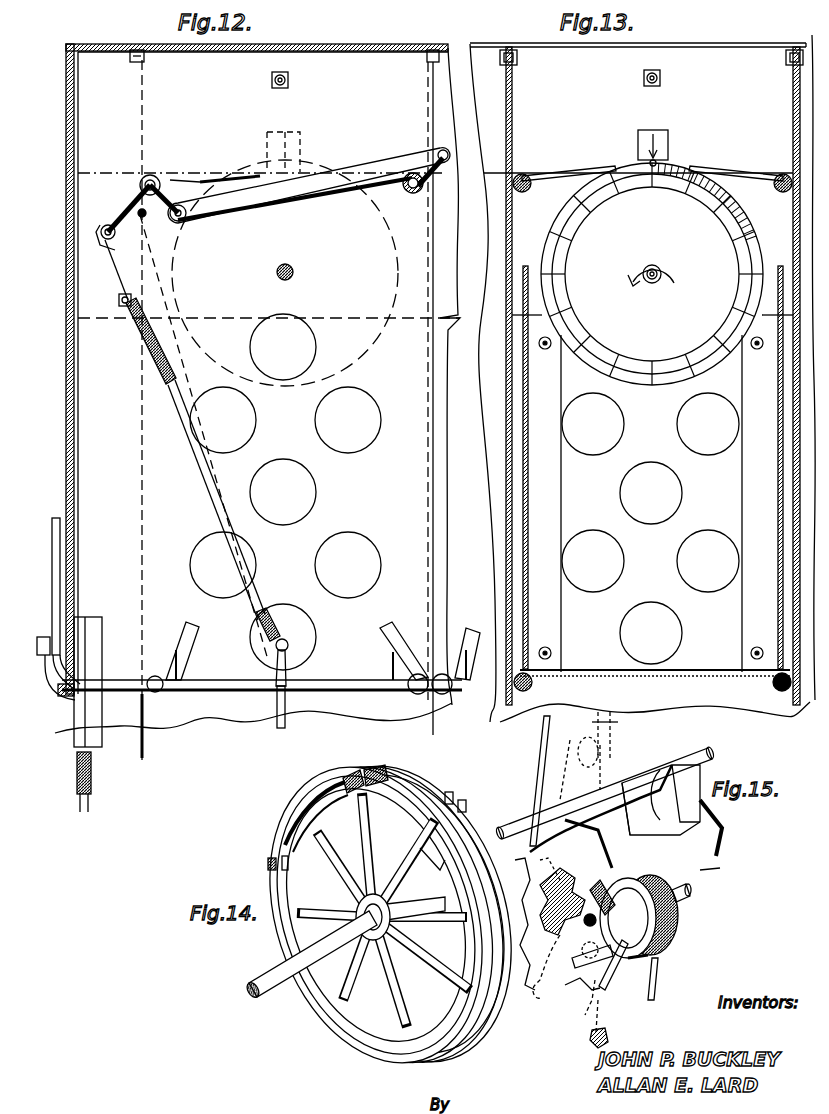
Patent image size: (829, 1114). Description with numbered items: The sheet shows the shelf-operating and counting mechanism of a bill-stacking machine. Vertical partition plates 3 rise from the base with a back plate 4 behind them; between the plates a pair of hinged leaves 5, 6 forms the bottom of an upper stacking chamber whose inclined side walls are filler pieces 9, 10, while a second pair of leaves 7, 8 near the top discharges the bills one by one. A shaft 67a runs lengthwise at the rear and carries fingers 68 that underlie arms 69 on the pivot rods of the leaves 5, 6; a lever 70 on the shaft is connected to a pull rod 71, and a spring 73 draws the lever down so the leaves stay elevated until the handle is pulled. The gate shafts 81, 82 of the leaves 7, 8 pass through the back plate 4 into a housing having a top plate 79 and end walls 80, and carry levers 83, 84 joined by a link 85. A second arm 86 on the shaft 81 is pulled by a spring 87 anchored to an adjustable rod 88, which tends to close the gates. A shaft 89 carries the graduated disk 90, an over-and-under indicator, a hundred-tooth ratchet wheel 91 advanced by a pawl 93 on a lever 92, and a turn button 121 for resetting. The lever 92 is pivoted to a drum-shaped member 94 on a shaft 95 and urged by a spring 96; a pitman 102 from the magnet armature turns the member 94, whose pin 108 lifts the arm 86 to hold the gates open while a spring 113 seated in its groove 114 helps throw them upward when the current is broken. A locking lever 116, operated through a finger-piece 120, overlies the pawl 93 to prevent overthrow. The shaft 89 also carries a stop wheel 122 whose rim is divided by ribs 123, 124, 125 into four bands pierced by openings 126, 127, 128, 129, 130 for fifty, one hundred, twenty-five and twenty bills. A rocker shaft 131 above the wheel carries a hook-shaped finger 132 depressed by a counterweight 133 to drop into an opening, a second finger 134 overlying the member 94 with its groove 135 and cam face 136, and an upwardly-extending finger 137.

In FIG. 12, the partition plates 3 is at (434, 492).
In FIG. 13, the partition plates 3 is at (483, 477).
In FIG. 12, the back plate 4 is at (287, 514).
In FIG. 13, the back plate 4 is at (650, 528).
In FIG. 13, the hinged leaf 5 is at (706, 676).
In FIG. 13, the hinged leaf 6 is at (677, 676).
In FIG. 12, the leaf 7 is at (232, 172).
In FIG. 13, the leaf 7 is at (740, 175).
In FIG. 12, the leaf 8 is at (338, 172).
In FIG. 13, the leaf 8 is at (572, 176).
In FIG. 13, the filler piece 9 is at (777, 386).
In FIG. 13, the filler piece 10 is at (528, 412).
In FIG. 12, the shaft 67a is at (215, 690).
In FIG. 12, the fingers 68 is at (182, 675).
In FIG. 12, the arms 69 is at (190, 648).
In FIG. 12, the lever 70 is at (52, 690).
In FIG. 12, the pull rod 71 is at (54, 600).
In FIG. 12, the spring 73 is at (92, 775).
In FIG. 12, the top plate 79 is at (330, 48).
In FIG. 12, the end walls 80 is at (75, 572).
In FIG. 12, the shaft 81 is at (153, 178).
In FIG. 13, the shaft 81 is at (780, 190).
In FIG. 12, the shaft 82 is at (406, 196).
In FIG. 13, the shaft 82 is at (525, 197).
In FIG. 12, the lever 83 is at (180, 205).
In FIG. 15, the lever 83 is at (530, 990).
In FIG. 12, the lever 84 is at (431, 188).
In FIG. 12, the link 85 is at (285, 196).
In FIG. 12, the second arm or lever 86 is at (122, 220).
In FIG. 15, the second arm or lever 86 is at (628, 1002).
In FIG. 12, the spring 87 is at (160, 349).
In FIG. 15, the spring 87 is at (590, 1036).
In FIG. 12, the adjustable rod 88 is at (286, 721).
In FIG. 12, the shaft 89 is at (291, 268).
In FIG. 14, the shaft 89 is at (277, 984).
In FIG. 12, the disk 90 is at (285, 273).
In FIG. 13, the disk 90 is at (652, 274).
In FIG. 15, the ratchet wheel 91 is at (572, 990).
In FIG. 15, the lever 92 is at (575, 901).
In FIG. 15, the pawl 93 is at (537, 924).
In FIG. 15, the drum-shaped member 94 is at (672, 920).
In FIG. 15, the shaft 95 is at (689, 891).
In FIG. 15, the spring 96 is at (503, 830).
In FIG. 15, the pitman or link 102 is at (660, 976).
In FIG. 12, the pin 108 is at (141, 220).
In FIG. 15, the pin 108 is at (604, 943).
In FIG. 15, the spring 113 is at (652, 882).
In FIG. 15, the peripheral groove 114 is at (660, 936).
In FIG. 15, the locking lever 116 is at (580, 768).
In FIG. 15, the finger-piece 120 is at (621, 736).
In FIG. 14, the turn button 121 is at (408, 917).
In FIG. 14, the stop wheel 122 is at (360, 1036).
In FIG. 14, the circumferential rib 123 is at (318, 790).
In FIG. 14, the circumferential rib 124 is at (352, 768).
In FIG. 14, the circumferential rib 125 is at (372, 766).
In FIG. 14, the opening 126 is at (268, 862).
In FIG. 14, the opening 127 is at (470, 988).
In FIG. 14, the opening 128 is at (312, 856).
In FIG. 14, the openings 129 is at (416, 857).
In FIG. 14, the openings 130 is at (462, 816).
In FIG. 15, the rocker shaft 131 is at (620, 776).
In FIG. 15, the hook-shaped finger 132 is at (722, 830).
In FIG. 15, the counterweight 133 is at (662, 770).
In FIG. 15, the second hook-shaped finger 134 is at (609, 844).
In FIG. 15, the peripheral groove 135 is at (636, 870).
In FIG. 15, the cam face 136 is at (700, 868).
In FIG. 15, the finger 137 is at (553, 736).